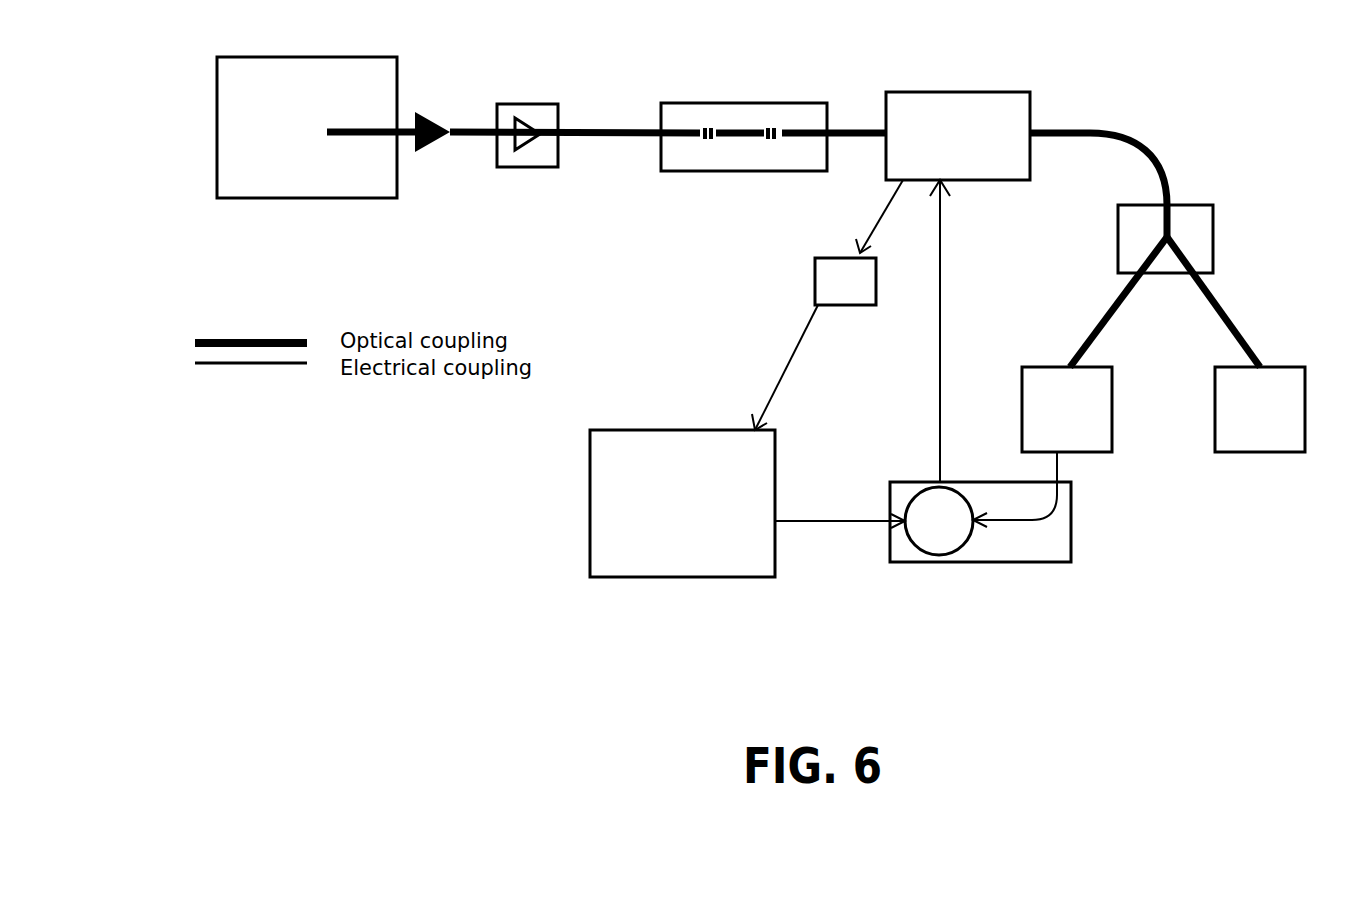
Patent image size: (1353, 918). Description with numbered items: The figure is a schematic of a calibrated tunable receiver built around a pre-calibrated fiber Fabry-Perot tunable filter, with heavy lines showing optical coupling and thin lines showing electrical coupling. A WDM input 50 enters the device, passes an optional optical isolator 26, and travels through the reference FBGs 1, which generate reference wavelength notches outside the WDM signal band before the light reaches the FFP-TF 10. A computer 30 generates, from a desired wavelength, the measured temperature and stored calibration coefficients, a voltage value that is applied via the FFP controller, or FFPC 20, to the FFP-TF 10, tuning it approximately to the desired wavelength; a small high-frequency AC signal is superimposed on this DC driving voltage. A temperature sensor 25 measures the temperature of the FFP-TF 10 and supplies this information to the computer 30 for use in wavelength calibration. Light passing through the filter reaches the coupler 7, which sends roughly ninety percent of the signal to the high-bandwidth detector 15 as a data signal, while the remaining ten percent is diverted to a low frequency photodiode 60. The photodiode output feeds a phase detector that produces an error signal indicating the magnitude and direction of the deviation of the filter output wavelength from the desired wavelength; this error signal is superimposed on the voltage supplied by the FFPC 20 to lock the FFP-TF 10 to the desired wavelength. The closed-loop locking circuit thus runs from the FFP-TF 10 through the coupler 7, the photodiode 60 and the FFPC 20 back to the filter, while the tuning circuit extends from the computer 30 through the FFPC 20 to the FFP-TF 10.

The reference FBGs 1 is at (672, 152).
The coupler 7 is at (1202, 222).
The FFP-TF 10 is at (987, 112).
The high-bandwidth detector 15 is at (1287, 435).
The FFP controller (FFPC) 20 is at (1048, 545).
The temperature sensor 25 is at (849, 291).
The optical isolator 26 is at (532, 152).
The computer 30 is at (683, 557).
The WDM input 50 is at (262, 177).
The low frequency photodiode 60 is at (1097, 435).